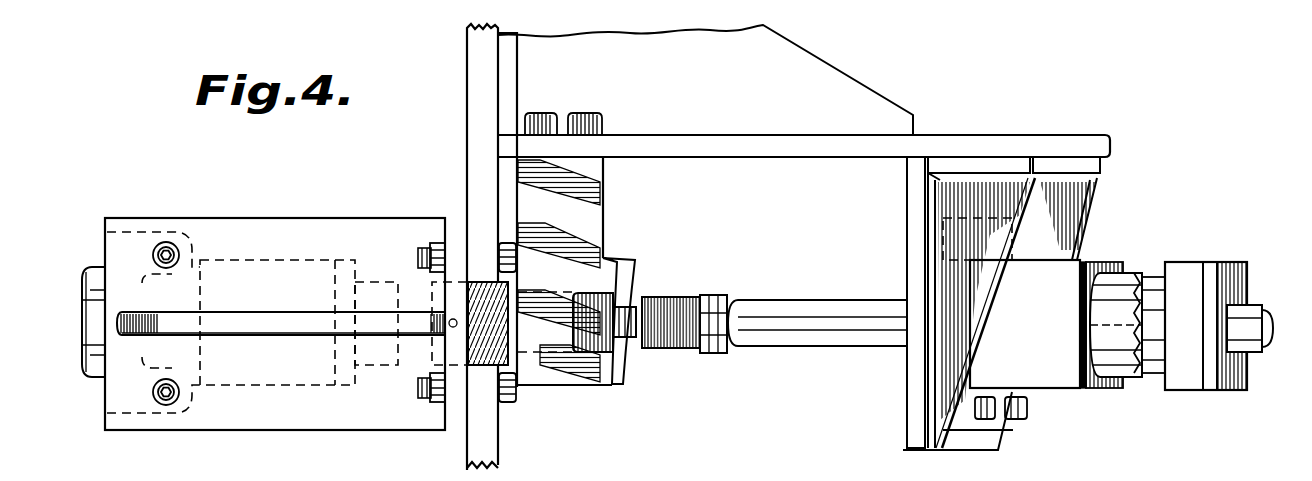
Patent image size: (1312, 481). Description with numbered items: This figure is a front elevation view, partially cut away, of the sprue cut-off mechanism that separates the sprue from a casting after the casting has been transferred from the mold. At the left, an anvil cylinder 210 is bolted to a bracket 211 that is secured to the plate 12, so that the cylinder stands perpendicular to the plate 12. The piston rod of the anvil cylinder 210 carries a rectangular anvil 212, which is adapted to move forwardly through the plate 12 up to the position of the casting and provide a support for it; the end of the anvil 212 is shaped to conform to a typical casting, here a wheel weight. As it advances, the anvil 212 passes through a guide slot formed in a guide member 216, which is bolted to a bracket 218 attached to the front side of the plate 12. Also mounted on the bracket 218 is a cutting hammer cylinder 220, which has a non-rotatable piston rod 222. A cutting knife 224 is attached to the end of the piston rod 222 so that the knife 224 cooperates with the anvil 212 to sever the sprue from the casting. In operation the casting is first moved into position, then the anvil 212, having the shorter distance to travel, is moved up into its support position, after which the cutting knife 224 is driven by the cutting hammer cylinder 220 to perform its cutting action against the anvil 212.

The plate 12 is at (478, 177).
The anvil cylinder 210 is at (270, 375).
The bracket 211 is at (360, 412).
The anvil 212 is at (590, 305).
The guide member 216 is at (547, 368).
The bracket 218 is at (795, 107).
The cutting hammer cylinder 220 is at (1123, 287).
The piston rod 222 is at (816, 338).
The cutting knife 224 is at (632, 337).